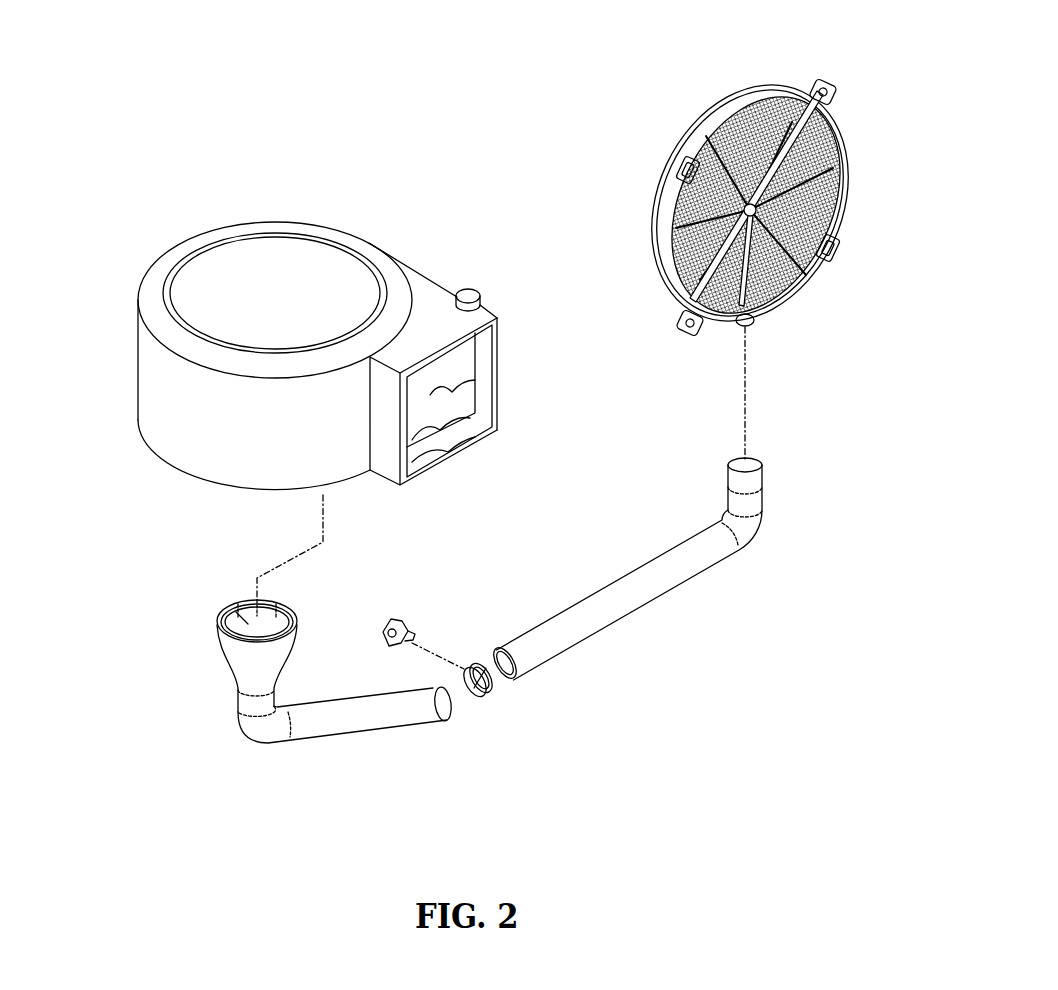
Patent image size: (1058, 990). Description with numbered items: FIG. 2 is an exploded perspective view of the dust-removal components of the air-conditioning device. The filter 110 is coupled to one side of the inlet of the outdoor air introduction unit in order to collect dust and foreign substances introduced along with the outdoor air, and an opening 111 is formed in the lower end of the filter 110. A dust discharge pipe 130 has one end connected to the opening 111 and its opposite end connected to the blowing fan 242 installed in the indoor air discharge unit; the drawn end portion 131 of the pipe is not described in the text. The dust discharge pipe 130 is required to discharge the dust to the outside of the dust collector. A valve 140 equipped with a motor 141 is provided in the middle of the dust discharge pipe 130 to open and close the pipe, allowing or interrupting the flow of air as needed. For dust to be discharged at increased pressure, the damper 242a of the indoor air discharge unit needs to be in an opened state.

The filter 110 is at (678, 128).
The opening 111 is at (757, 327).
The dust discharge pipe 130 is at (352, 722).
The funnel inlet 131 is at (220, 610).
The valve 140 is at (484, 713).
The motor 141 is at (393, 617).
The blowing fan 242 is at (143, 237).
The damper 242a is at (482, 358).